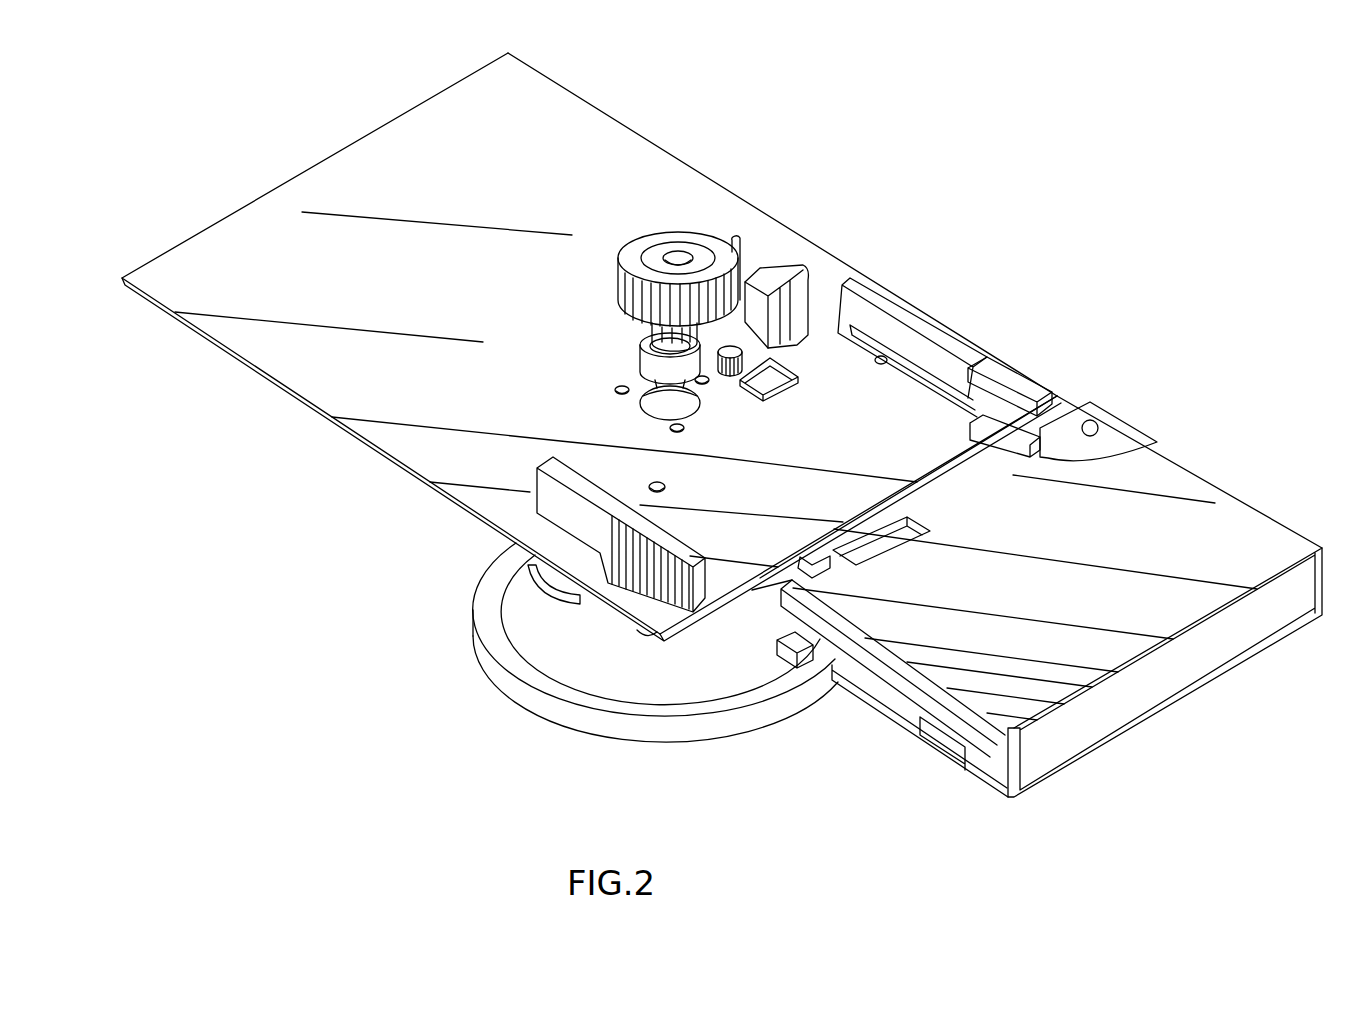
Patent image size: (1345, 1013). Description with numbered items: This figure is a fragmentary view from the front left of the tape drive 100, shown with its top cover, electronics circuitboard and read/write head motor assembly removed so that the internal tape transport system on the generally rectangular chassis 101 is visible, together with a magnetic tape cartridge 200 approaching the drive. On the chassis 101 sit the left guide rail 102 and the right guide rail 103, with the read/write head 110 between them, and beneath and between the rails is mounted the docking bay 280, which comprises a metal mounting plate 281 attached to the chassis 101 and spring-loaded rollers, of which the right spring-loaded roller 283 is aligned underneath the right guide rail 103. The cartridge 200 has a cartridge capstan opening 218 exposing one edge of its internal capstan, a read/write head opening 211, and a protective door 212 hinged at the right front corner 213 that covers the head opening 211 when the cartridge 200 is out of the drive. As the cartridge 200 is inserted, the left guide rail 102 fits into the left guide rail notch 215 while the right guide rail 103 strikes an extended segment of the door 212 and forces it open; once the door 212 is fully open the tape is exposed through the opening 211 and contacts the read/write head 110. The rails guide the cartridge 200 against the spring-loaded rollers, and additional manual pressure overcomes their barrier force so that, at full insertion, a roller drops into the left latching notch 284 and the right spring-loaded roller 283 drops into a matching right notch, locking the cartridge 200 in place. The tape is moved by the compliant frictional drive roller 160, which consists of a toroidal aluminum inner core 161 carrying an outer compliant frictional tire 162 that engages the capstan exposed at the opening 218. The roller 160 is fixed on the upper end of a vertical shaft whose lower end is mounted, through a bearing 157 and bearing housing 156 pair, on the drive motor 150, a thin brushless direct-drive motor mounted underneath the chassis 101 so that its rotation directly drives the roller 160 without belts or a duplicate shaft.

The tape drive 100 is at (600, 92).
The chassis 101 is at (638, 155).
The left guide rail 102 is at (540, 502).
The right guide rail 103 is at (865, 288).
The read/write head 110 is at (777, 263).
The drive motor 150 is at (488, 592).
The bearing housing 156 is at (643, 365).
The bearing 157 is at (652, 327).
The compliant frictional drive roller 160 is at (673, 232).
The inner core 161 is at (697, 250).
The outer compliant frictional tire 162 is at (617, 290).
The magnetic tape cartridge 200 is at (1205, 548).
The read/write head opening 211 is at (1017, 477).
The protective door 212 is at (1020, 382).
The right front corner 213 is at (1093, 425).
The left guide rail notch 215 is at (927, 715).
The cartridge capstan opening 218 is at (943, 492).
The docking bay 280 is at (838, 450).
The metal mounting plate 281 is at (758, 590).
The right spring-loaded roller 283 is at (887, 367).
The left latching notch 284 is at (815, 683).